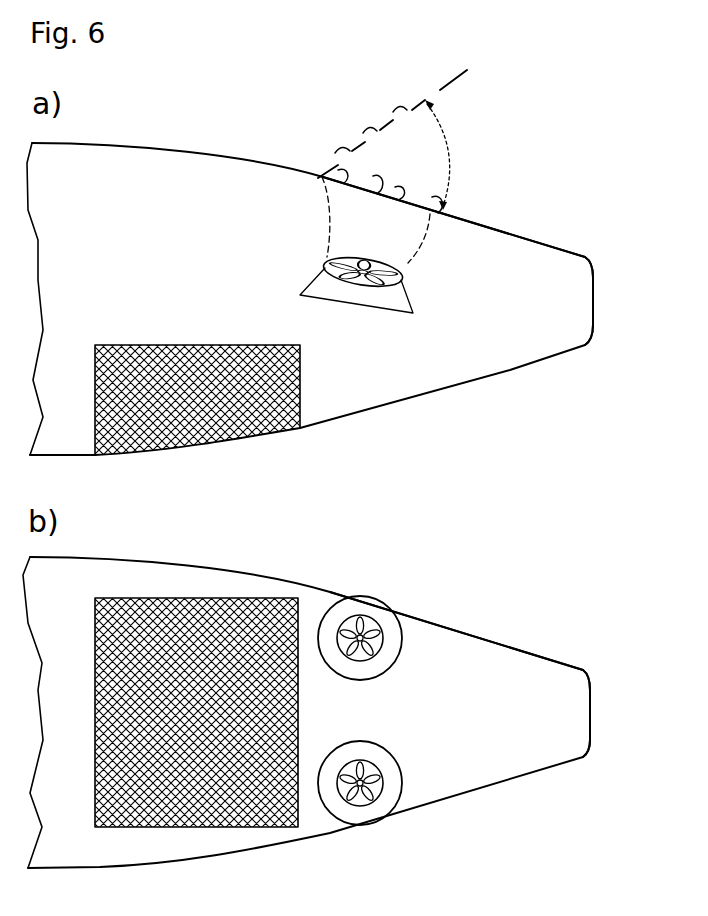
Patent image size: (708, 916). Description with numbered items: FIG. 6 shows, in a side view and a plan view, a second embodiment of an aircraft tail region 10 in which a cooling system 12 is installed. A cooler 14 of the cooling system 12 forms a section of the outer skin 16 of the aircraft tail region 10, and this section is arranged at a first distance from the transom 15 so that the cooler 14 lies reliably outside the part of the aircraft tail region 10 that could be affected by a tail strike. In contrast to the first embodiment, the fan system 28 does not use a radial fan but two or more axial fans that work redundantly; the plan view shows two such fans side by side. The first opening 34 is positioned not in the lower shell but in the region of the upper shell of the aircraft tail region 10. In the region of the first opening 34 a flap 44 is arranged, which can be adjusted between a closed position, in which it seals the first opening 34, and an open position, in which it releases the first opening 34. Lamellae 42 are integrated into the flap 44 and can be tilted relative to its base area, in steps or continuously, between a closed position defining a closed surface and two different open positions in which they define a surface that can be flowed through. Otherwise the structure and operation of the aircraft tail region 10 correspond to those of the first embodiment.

The aircraft tail region 10 is at (471, 167).
The cooling system 12 is at (242, 246).
The cooler 14 is at (148, 352).
The transom 15 is at (594, 300).
The outer skin 16 is at (523, 237).
The fan system 28 is at (360, 322).
The first opening 34 is at (433, 213).
The lamellae 42 is at (370, 163).
The flap 44 is at (385, 128).